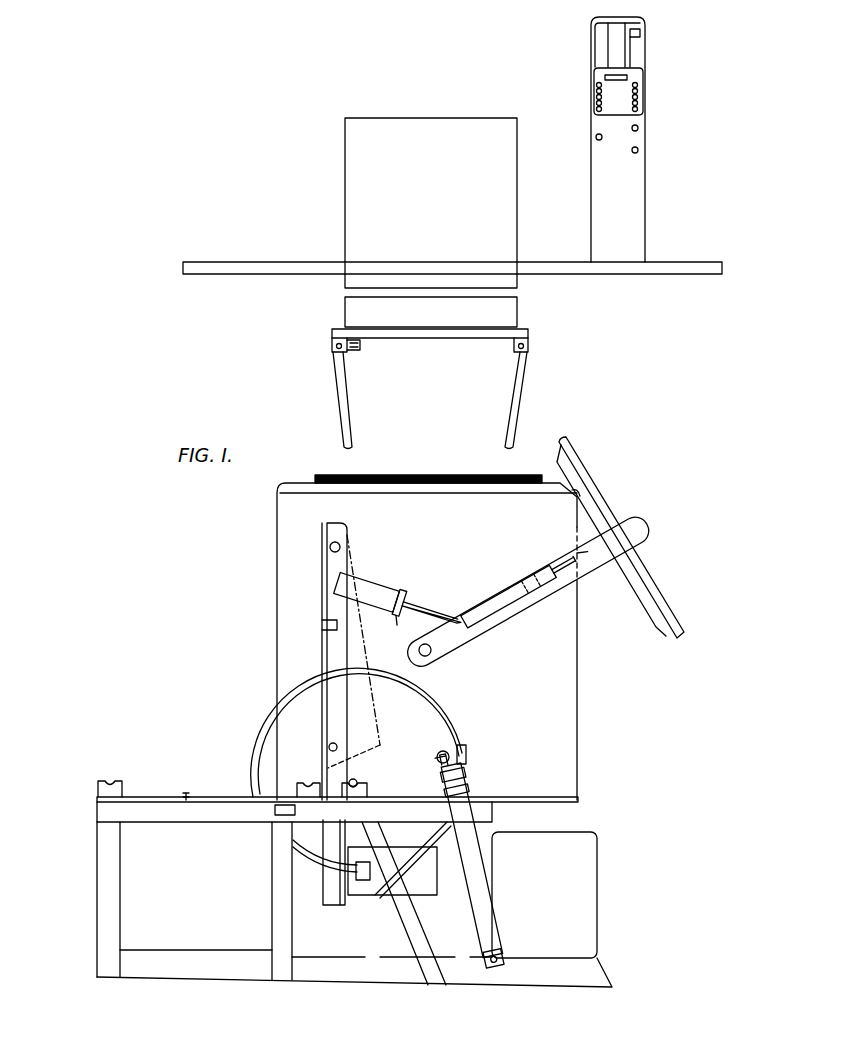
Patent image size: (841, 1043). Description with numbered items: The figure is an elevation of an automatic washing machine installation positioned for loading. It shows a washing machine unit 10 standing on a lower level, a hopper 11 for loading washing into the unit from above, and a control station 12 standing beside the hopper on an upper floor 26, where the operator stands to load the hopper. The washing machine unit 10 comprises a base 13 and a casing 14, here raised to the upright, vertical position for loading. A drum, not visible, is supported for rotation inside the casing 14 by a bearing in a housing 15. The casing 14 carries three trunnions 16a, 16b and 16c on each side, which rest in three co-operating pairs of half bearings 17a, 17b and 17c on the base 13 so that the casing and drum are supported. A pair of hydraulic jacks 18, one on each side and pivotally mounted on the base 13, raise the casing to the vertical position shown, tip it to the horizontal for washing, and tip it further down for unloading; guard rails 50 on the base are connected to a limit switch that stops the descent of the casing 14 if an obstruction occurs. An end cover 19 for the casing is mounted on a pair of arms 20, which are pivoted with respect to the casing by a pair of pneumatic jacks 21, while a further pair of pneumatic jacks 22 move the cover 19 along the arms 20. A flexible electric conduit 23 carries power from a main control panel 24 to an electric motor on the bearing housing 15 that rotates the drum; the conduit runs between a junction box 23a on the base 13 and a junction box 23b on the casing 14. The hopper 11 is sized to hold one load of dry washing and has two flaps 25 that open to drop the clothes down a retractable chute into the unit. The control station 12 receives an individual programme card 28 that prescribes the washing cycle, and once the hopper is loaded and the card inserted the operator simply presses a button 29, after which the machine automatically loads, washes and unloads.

The washing machine unit 10 is at (584, 698).
The hopper 11 is at (341, 306).
The control station 12 is at (583, 84).
The base 13 is at (166, 808).
The casing 14 is at (565, 661).
The bearing housing 15 is at (418, 888).
The trunnion 16a is at (341, 547).
The trunnion 16b is at (338, 747).
The trunnion 16c is at (357, 782).
The half bearing 17a is at (112, 781).
The half bearing 17b is at (300, 786).
The half bearing 17c is at (368, 788).
The hydraulic jack 18 is at (470, 865).
The end cover 19 is at (640, 549).
The arm 20 is at (574, 560).
The pneumatic jack 21 is at (383, 585).
The pneumatic jack 22 is at (514, 597).
The flexible electric conduit 23 is at (437, 703).
The junction box 23a is at (362, 882).
The junction box 23b is at (467, 752).
The main control panel 24 is at (597, 855).
The flap 25 is at (437, 340).
The upper floor 26 is at (612, 268).
The programme card 28 is at (626, 58).
The button 29 is at (640, 34).
The guard rail 50 is at (241, 797).